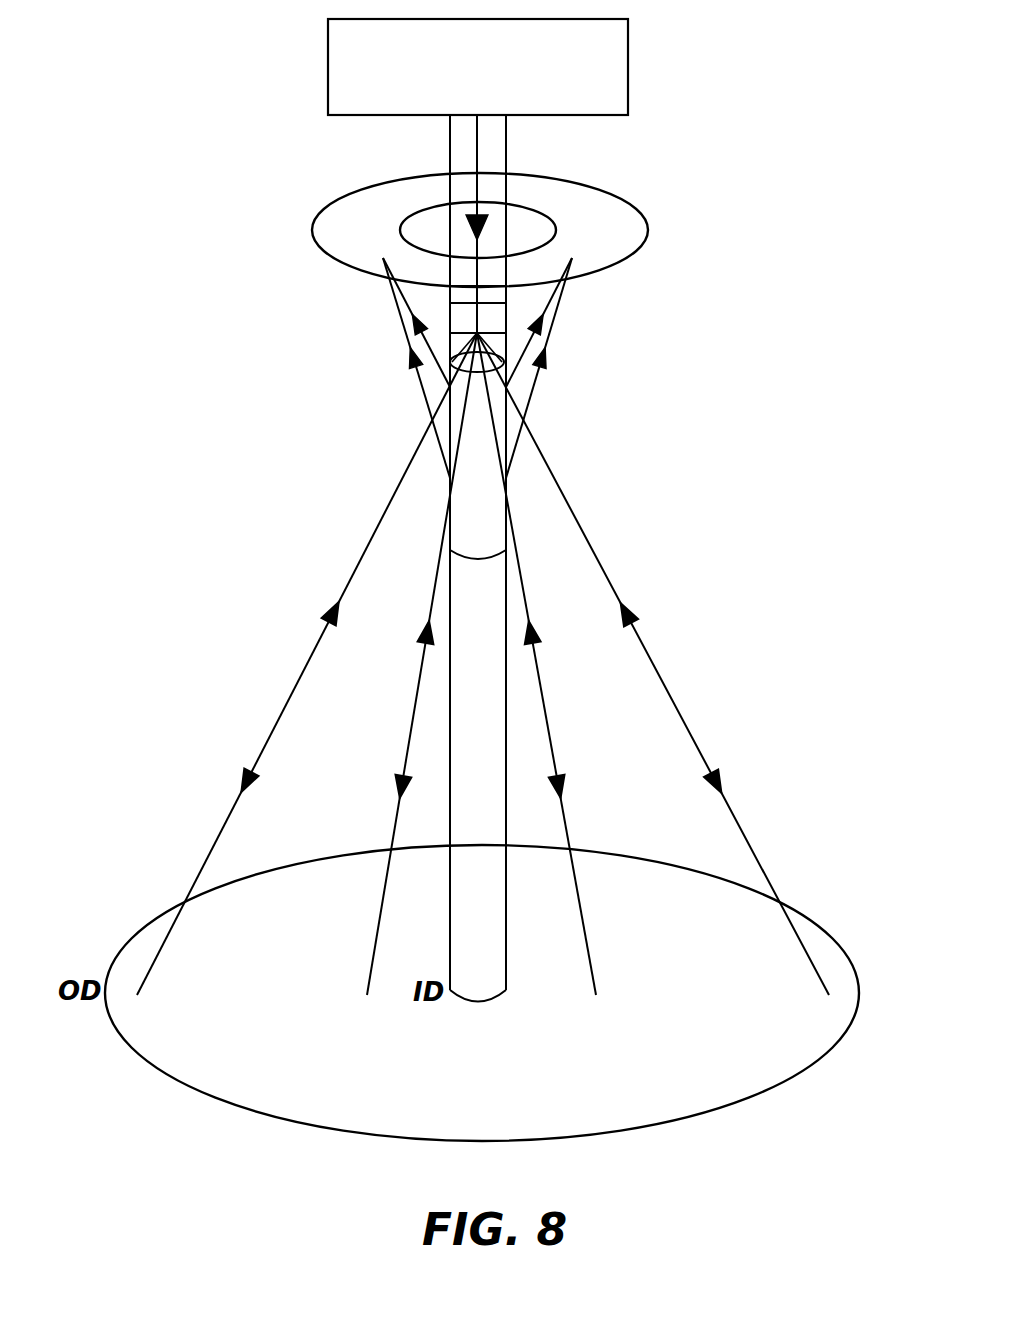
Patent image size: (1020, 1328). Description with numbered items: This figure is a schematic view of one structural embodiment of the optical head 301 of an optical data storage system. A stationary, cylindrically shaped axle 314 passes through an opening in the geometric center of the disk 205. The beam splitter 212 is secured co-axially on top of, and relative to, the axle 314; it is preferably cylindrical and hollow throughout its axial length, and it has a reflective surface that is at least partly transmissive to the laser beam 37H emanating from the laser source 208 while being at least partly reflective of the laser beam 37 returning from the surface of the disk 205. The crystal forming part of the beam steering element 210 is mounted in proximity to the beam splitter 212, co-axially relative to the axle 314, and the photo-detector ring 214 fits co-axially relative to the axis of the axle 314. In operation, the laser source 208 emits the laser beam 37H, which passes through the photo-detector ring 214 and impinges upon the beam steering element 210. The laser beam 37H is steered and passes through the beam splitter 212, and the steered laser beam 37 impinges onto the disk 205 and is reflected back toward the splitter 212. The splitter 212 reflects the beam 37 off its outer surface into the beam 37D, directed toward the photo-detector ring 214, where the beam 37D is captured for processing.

The laser source 208 is at (617, 77).
The laser beam 37H is at (478, 142).
The photo-detector ring 214 is at (627, 232).
The optical head 301 is at (262, 220).
The reflected beam 37D is at (407, 343).
The beam steering element 210 is at (493, 323).
The beam splitter 212 is at (485, 518).
The steered laser beam 37 is at (280, 717).
The axle 314 is at (479, 993).
The disk 205 is at (735, 1072).